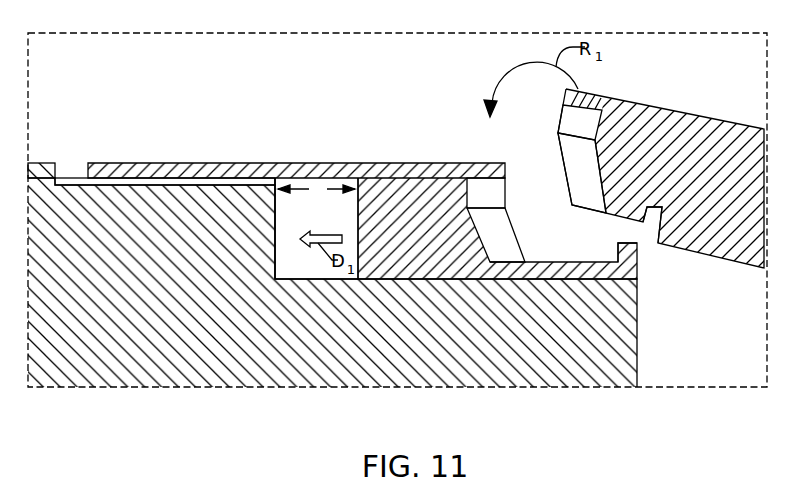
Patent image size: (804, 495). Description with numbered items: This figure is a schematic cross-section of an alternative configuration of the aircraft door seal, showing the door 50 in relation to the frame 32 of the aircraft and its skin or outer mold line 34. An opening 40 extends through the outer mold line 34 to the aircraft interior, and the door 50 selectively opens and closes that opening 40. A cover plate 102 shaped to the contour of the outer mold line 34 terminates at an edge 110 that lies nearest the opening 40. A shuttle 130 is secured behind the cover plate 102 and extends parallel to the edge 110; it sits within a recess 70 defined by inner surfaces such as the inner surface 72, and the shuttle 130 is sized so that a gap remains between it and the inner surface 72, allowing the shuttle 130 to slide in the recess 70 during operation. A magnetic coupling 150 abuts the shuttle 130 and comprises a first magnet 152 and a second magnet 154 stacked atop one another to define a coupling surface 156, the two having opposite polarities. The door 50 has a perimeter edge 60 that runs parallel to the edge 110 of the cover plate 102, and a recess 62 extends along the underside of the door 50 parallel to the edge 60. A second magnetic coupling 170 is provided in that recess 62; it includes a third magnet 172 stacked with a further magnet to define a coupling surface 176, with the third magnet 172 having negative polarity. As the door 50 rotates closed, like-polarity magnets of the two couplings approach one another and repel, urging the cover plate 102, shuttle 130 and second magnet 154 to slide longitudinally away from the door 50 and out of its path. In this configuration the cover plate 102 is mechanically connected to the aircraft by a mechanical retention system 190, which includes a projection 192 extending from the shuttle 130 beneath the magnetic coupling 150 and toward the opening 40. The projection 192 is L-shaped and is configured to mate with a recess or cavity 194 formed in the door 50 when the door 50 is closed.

The frame 32 is at (138, 319).
The outer mold line 34 is at (48, 163).
The opening 40 is at (707, 383).
The door 50 is at (723, 201).
The edge 60 is at (566, 138).
The recess 62 is at (603, 116).
The recess 70 is at (339, 200).
The inner surface 72 is at (277, 212).
The cover plate 102 is at (148, 163).
The edge 110 is at (505, 172).
The shuttle 130 is at (417, 255).
The magnetic coupling 150 is at (521, 198).
The first magnet 152 is at (474, 183).
The second magnet 154 is at (517, 258).
The coupling surface 156 is at (508, 211).
The magnetic coupling 170 is at (547, 149).
The third magnet 172 is at (584, 94).
The coupling surface 176 is at (560, 118).
The mechanical retention system 190 is at (80, 178).
The projection 192 is at (639, 257).
The cavity 194 is at (666, 196).